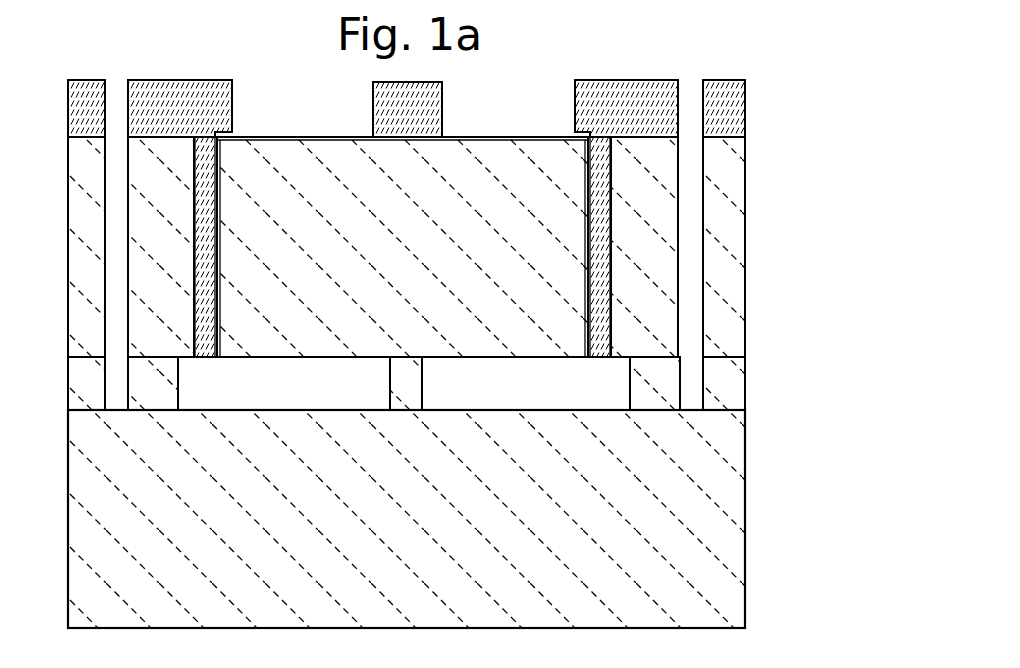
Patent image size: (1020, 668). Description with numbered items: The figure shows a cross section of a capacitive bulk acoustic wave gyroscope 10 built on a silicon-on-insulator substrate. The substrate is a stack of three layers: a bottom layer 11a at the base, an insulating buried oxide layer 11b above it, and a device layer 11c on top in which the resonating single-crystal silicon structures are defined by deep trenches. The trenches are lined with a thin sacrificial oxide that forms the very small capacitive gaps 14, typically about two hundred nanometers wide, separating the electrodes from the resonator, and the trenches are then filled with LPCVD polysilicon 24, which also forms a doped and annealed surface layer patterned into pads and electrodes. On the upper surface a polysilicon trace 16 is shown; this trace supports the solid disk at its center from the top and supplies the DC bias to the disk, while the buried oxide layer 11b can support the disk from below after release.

The bulk acoustic wave gyroscope 10 is at (828, 141).
The bottom layer 11a is at (745, 510).
The insulating (buried oxide) layer 11b is at (745, 385).
The device layer 11c is at (745, 224).
The capacitive gaps 14 is at (229, 141).
The polysilicon trace 16 is at (442, 98).
The LPCVD polysilicon 24 is at (745, 102).